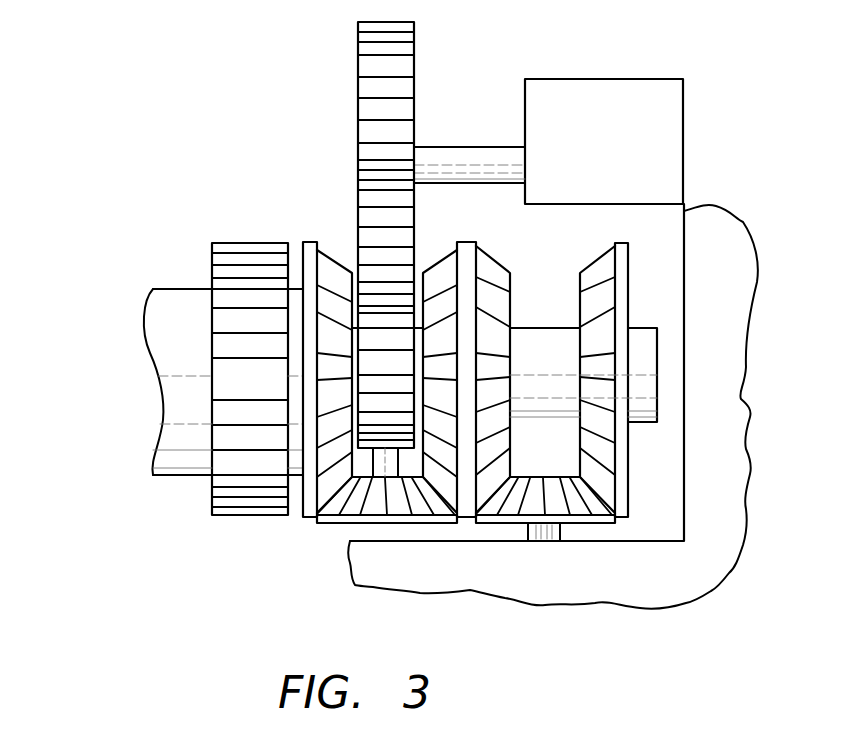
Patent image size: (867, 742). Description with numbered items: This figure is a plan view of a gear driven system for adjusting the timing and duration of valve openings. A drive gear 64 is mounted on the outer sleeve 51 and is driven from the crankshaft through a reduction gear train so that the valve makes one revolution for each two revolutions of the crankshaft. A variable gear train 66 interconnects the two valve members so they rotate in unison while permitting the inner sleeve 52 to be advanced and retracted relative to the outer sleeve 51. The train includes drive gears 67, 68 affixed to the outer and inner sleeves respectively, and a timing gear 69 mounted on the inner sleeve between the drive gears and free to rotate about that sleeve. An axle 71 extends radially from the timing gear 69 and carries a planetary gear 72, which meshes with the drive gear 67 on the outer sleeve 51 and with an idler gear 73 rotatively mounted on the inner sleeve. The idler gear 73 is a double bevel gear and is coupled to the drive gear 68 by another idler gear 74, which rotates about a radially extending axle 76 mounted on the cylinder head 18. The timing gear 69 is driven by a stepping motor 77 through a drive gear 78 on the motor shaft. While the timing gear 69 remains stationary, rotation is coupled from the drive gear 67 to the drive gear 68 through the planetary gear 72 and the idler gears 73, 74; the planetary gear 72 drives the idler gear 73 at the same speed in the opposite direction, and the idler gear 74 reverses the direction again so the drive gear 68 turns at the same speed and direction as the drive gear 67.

The cylinder head 18 is at (697, 573).
The outer sleeve 51 is at (185, 290).
The inner sleeve 52 is at (644, 362).
The drive gear 64 is at (232, 245).
The variable gear train 66 is at (232, 186).
The drive gear 67 is at (333, 250).
The drive gear 68 is at (602, 303).
The timing gear 69 is at (367, 423).
The axle 71 is at (378, 468).
The planetary gear 72 is at (353, 508).
The idler gear 73 is at (465, 242).
The idler gear 74 is at (515, 505).
The axle 76 is at (538, 537).
The stepping motor 77 is at (618, 88).
The drive gear 78 is at (402, 108).